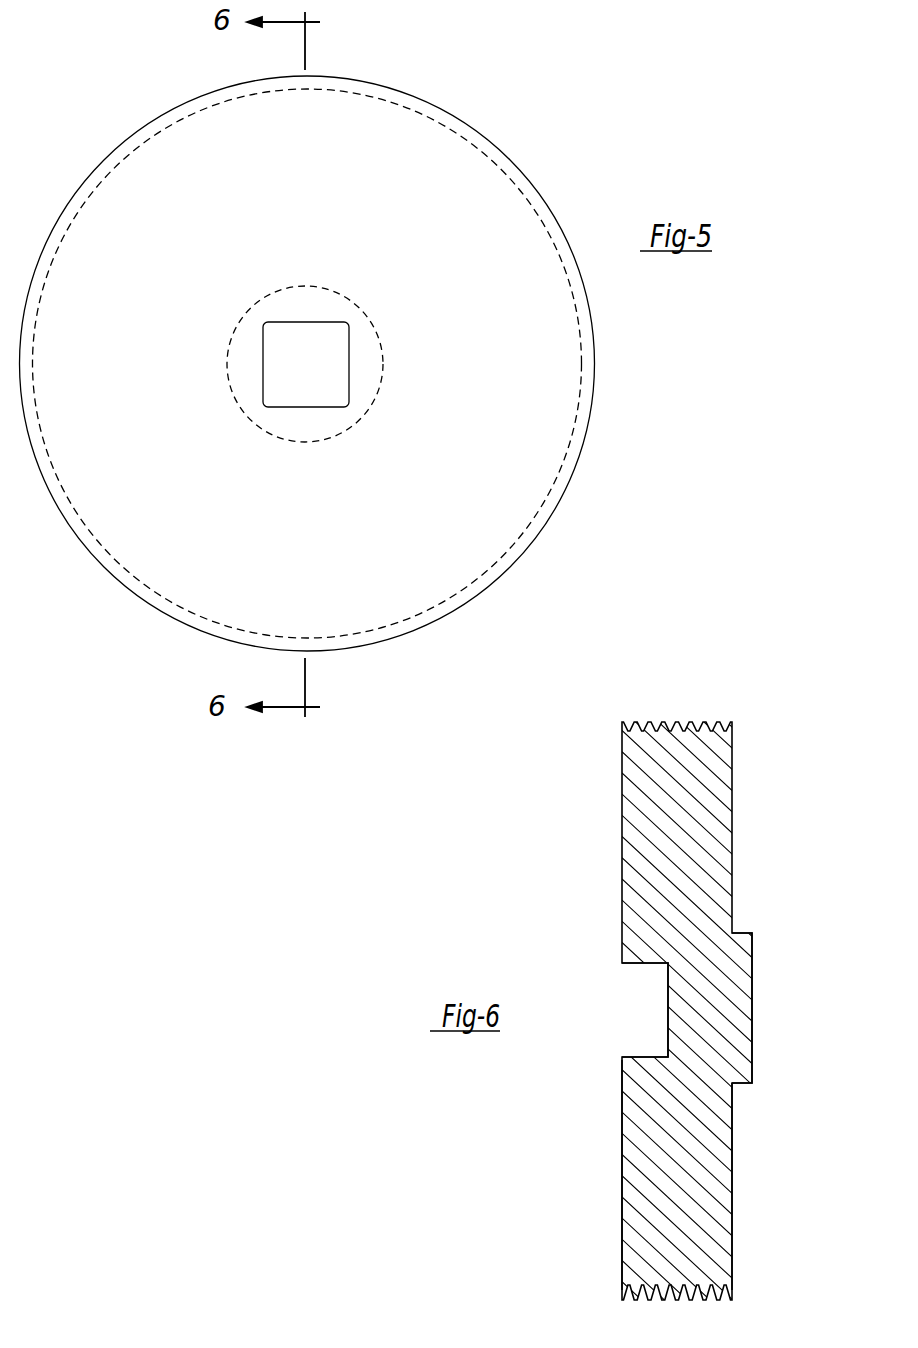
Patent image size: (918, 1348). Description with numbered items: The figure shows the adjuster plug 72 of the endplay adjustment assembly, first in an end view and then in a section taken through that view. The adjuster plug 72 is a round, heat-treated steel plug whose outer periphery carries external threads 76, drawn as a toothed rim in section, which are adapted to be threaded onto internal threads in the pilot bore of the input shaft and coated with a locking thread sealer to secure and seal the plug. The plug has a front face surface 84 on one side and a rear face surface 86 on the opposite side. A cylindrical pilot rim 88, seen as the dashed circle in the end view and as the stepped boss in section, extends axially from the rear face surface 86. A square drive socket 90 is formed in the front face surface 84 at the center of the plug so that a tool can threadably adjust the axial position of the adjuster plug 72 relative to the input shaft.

In FIG. 5, the adjuster plug 72 is at (433, 100).
In FIG. 6, the adjuster plug 72 is at (606, 1180).
In FIG. 5, the external threads 76 is at (529, 189).
In FIG. 6, the external threads 76 is at (688, 722).
In FIG. 5, the front face surface 84 is at (535, 387).
In FIG. 6, the front face surface 84 is at (622, 1100).
In FIG. 6, the rear face surface 86 is at (732, 1148).
In FIG. 5, the cylindrical pilot rim 88 is at (262, 300).
In FIG. 6, the cylindrical pilot rim 88 is at (743, 960).
In FIG. 5, the drive socket 90 is at (345, 368).
In FIG. 6, the drive socket 90 is at (643, 963).